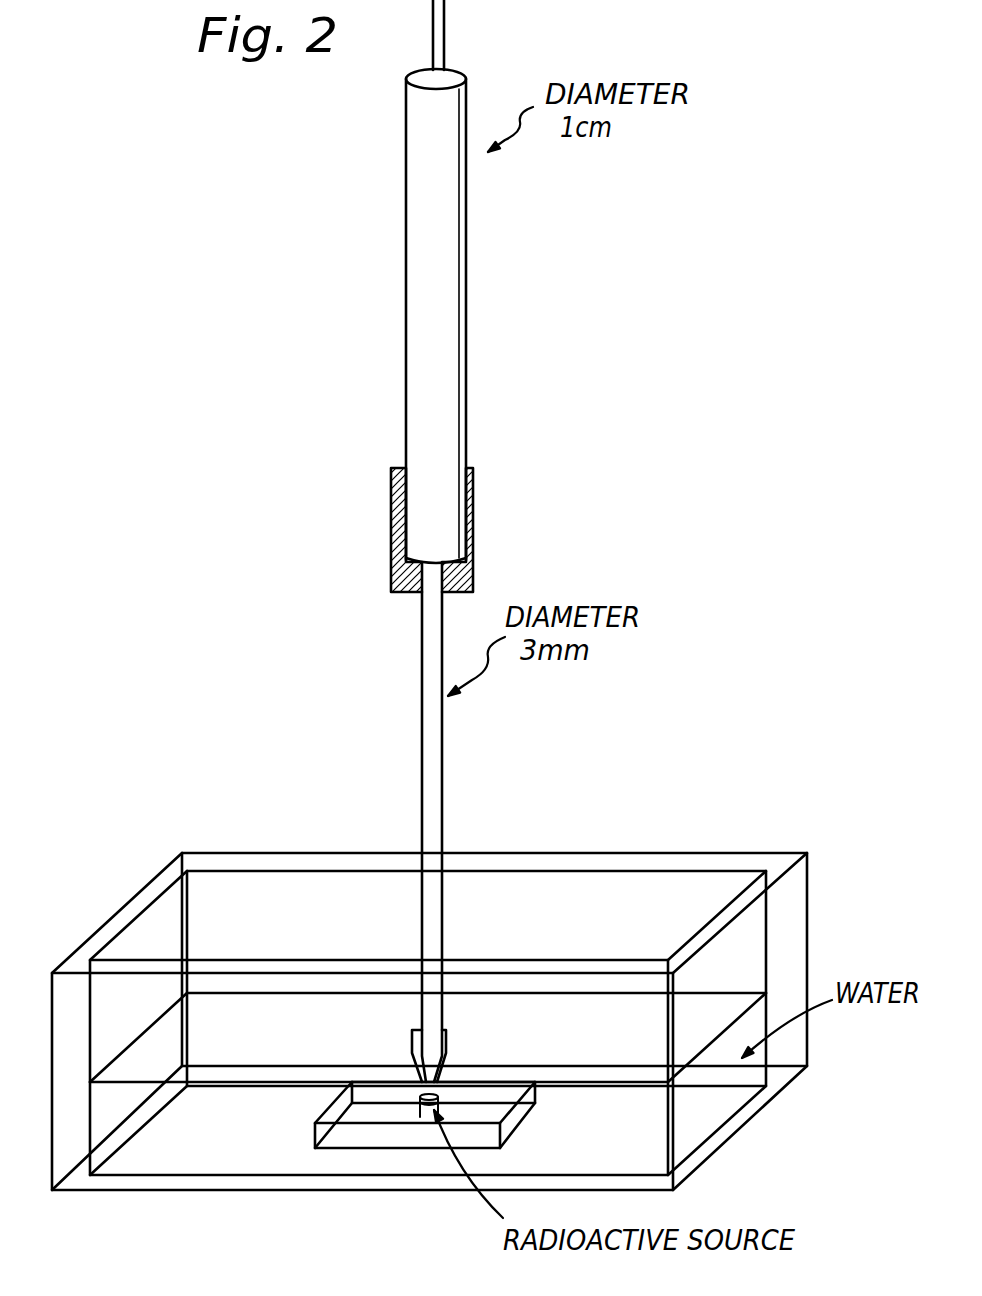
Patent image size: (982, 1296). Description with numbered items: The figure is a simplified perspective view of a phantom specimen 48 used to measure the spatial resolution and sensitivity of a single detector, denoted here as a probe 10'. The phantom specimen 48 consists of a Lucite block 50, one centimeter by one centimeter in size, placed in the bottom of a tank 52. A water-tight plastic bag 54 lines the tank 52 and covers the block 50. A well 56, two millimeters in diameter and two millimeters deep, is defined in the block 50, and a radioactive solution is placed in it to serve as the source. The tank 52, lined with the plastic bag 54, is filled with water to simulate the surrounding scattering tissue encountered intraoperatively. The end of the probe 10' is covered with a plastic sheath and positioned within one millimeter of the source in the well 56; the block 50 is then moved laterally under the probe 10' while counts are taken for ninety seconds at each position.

The probe 10' is at (506, 541).
The phantom specimen 48 is at (708, 810).
The Lucite block 50 is at (423, 1128).
The tank 52 is at (808, 898).
The water-tight plastic bag 54 is at (735, 887).
The well 56 is at (416, 1105).